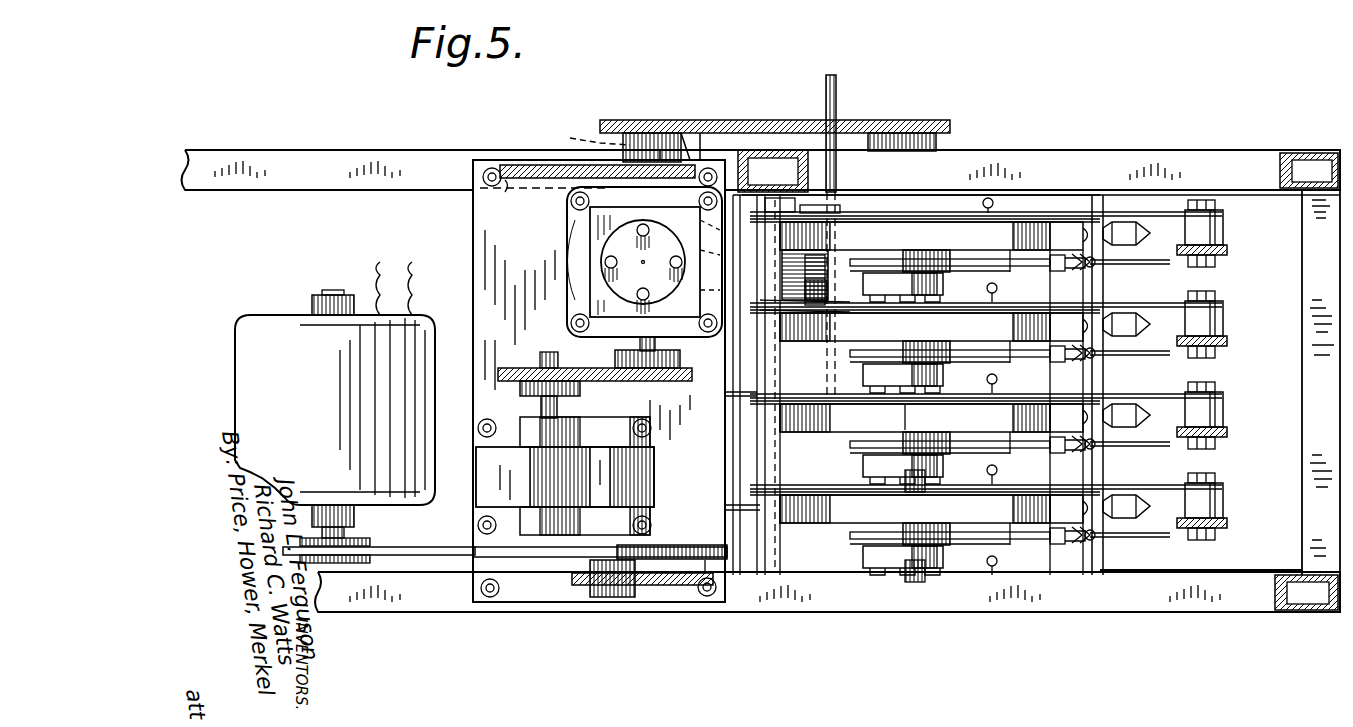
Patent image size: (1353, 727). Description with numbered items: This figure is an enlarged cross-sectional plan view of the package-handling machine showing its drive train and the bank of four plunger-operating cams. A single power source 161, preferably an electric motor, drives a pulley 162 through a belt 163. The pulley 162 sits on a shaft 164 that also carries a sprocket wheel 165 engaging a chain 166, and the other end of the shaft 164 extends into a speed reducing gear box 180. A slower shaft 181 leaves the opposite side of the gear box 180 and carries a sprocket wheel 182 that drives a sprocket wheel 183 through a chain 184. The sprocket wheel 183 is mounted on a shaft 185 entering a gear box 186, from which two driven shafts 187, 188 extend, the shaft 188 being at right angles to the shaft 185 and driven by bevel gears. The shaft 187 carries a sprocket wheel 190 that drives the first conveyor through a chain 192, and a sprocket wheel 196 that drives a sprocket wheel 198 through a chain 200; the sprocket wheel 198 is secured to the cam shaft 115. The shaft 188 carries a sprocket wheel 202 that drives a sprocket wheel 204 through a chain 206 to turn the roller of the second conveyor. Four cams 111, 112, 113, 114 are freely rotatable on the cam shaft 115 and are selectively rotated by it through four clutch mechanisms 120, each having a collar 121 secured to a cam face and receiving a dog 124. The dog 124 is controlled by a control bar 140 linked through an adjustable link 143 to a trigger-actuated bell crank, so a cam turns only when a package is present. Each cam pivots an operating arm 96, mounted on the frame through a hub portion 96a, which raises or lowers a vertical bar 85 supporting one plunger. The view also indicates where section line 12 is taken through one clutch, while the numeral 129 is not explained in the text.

The section line 12 is at (893, 417).
The vertical bar 85 is at (1228, 252).
The operating arm 96 is at (940, 213).
The hub portion 96a is at (740, 394).
The cam 111 is at (1010, 264).
The cam 112 is at (1010, 354).
The cam 113 is at (1010, 444).
The cam 114 is at (1010, 534).
The cam shaft 115 is at (895, 165).
The clutch mechanism 120 is at (945, 284).
The collar 121 is at (1010, 262).
The dog 124 is at (905, 260).
The pinion 129 is at (930, 470).
The control bar 140 is at (988, 282).
The link 143 is at (1160, 266).
The power source 161 is at (275, 312).
The pulley 162 is at (475, 575).
The belt 163 is at (430, 547).
The shaft 164 is at (630, 540).
The sprocket wheel 165 is at (635, 597).
The chain 166 is at (690, 590).
The speed reducing gear box 180 is at (655, 466).
The shaft 181 is at (560, 404).
The sprocket wheel 182 is at (520, 390).
The sprocket wheel 183 is at (680, 360).
The chain 184 is at (590, 371).
The shaft 185 is at (655, 343).
The gear box 186 is at (585, 246).
The driven shaft 187 is at (582, 132).
The driven shaft 188 is at (792, 285).
The sprocket wheel 190 is at (688, 133).
The chain 192 is at (512, 182).
The sprocket wheel 196 is at (638, 133).
The sprocket wheel 198 is at (935, 141).
The chain 200 is at (810, 120).
The sprocket wheel 202 is at (840, 300).
The sprocket wheel 204 is at (838, 90).
The chain 206 is at (830, 208).